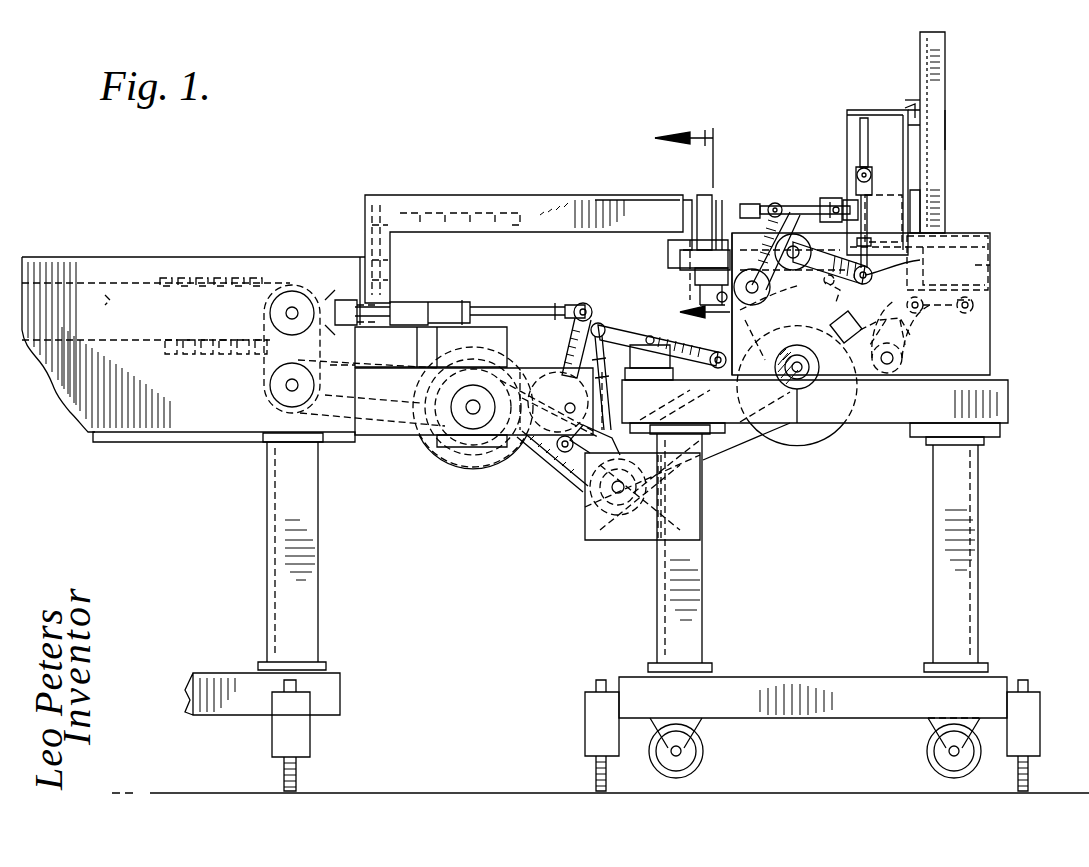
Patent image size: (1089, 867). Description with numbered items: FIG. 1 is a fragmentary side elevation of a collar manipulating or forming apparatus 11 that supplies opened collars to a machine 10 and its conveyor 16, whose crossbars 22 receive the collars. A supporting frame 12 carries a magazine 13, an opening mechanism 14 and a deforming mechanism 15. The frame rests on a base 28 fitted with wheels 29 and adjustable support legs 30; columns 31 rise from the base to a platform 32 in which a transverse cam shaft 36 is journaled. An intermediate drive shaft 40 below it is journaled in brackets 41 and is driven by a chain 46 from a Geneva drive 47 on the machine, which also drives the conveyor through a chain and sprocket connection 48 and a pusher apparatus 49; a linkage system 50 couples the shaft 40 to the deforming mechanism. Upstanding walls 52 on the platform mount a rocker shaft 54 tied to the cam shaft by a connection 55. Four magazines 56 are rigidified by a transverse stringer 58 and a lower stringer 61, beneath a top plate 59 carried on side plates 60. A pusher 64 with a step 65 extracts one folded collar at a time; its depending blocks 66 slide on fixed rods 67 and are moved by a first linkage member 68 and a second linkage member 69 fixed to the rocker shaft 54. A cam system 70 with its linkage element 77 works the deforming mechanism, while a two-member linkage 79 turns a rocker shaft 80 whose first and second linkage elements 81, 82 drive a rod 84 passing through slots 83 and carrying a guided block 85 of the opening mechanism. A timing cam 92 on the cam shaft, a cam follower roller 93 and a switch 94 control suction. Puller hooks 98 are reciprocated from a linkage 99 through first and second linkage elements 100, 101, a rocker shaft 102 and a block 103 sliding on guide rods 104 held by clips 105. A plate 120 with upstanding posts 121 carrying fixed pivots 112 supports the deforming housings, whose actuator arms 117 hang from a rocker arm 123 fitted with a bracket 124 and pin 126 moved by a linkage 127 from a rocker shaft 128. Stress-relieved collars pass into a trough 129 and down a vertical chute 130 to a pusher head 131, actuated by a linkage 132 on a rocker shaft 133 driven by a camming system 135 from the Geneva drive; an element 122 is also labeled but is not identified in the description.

The machine 10 is at (158, 251).
The collar manipulating or forming apparatus 11 is at (588, 185).
The supporting frame 12 is at (996, 552).
The magazine 13 is at (962, 100).
The opening mechanism 14 is at (870, 200).
The deforming mechanism 15 is at (730, 182).
The conveyor 16 is at (114, 310).
The crossbars 22 is at (270, 278).
The base 28 is at (800, 690).
The wheels 29 is at (935, 752).
The support legs 30 is at (1032, 780).
The columns 31 is at (706, 572).
The platform 32 is at (990, 420).
The shaft 36 is at (801, 406).
The shaft 40 is at (616, 489).
The brackets 41 is at (648, 540).
The chain 46 is at (550, 468).
The Geneva drive 47 is at (473, 460).
The chain and sprocket connection 48 is at (378, 432).
The pusher apparatus 49 is at (498, 296).
The linkage system 50 is at (622, 304).
The upstanding walls 52 is at (975, 350).
The rocker shaft 54 is at (890, 376).
The connection 55 is at (886, 318).
The magazines 56 is at (945, 145).
The transverse stringer 58 is at (910, 100).
The top plate 59 is at (870, 110).
The side plates 60 is at (850, 128).
The lower stringer member 61 is at (918, 210).
The pusher 64 is at (975, 240).
The step 65 is at (950, 240).
The depending blocks 66 is at (990, 262).
The rods 67 is at (954, 267).
The first linkage member 68 is at (930, 312).
The second linkage member 69 is at (912, 340).
The cam system 70 is at (616, 502).
The linkage element 77 is at (590, 302).
The two-member linkage system 79 is at (843, 293).
The rocker shaft 80 is at (795, 248).
The first linkage element 81 is at (909, 260).
The second linkage element 82 is at (832, 257).
The slots 83 is at (870, 128).
The rod 84 is at (872, 170).
The block 85 is at (845, 178).
The timing cam 92 is at (785, 396).
The cam follower roller 93 is at (845, 390).
The switch 94 is at (838, 312).
The puller hooks 98 is at (876, 200).
The linkage 99 is at (760, 305).
The first linkage element 100 is at (786, 205).
The second linkage element 101 is at (758, 265).
The rocker shaft 102 is at (770, 287).
The block 103 is at (828, 198).
The guide rods 104 is at (774, 203).
The clips 105 is at (752, 203).
The fixed pivots 112 is at (706, 205).
The actuator arm 117 is at (685, 272).
The plate 120 is at (670, 252).
The upstanding posts 121 is at (684, 215).
The press plate 122 is at (670, 256).
The rocker arm 123 is at (695, 280).
The bracket 124 is at (700, 296).
The pin 126 is at (649, 389).
The linkage 127 is at (690, 365).
The rocker shaft 128 is at (645, 355).
The trough 129 is at (540, 182).
The vertical chute 130 is at (385, 195).
The pusher head 131 is at (352, 298).
The linkage 132 is at (566, 308).
The rocker shaft 133 is at (566, 402).
The camming system 135 is at (518, 370).